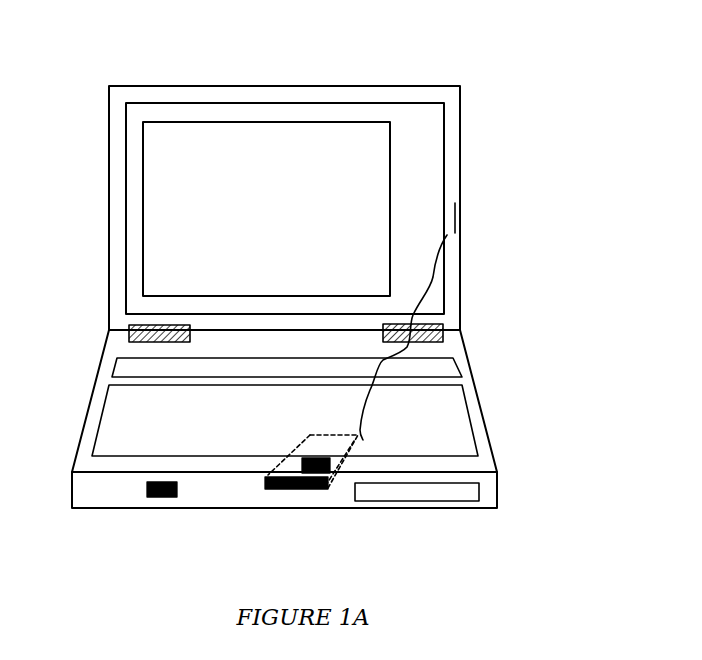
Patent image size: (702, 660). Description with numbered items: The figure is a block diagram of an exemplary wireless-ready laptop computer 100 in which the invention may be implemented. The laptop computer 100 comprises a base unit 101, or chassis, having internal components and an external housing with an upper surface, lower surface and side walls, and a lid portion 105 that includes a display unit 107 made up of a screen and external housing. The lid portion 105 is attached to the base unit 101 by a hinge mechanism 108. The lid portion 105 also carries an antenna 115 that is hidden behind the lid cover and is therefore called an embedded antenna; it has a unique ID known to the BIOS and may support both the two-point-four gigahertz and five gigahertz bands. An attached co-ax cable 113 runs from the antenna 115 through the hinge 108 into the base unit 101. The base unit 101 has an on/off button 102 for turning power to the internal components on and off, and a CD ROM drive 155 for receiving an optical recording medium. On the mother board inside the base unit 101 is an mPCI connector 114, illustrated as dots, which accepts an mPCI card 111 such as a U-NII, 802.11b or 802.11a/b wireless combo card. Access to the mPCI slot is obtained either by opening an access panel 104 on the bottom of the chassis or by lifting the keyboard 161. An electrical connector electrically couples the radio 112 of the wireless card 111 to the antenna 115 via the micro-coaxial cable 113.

The laptop computer 100 is at (508, 128).
The base unit 101 is at (92, 388).
The on/off button 102 is at (157, 497).
The access panel 104 is at (299, 489).
The lid portion 105 is at (109, 235).
The display unit 107 is at (277, 138).
The hinge mechanism 108 is at (129, 328).
The mPCI card 111 is at (290, 455).
The radio 112 is at (352, 455).
The co-ax cable 113 is at (440, 258).
The mPCI connector 114 is at (340, 430).
The antenna 115 is at (456, 221).
The CD ROM drive 155 is at (445, 492).
The keyboard 161 is at (149, 428).